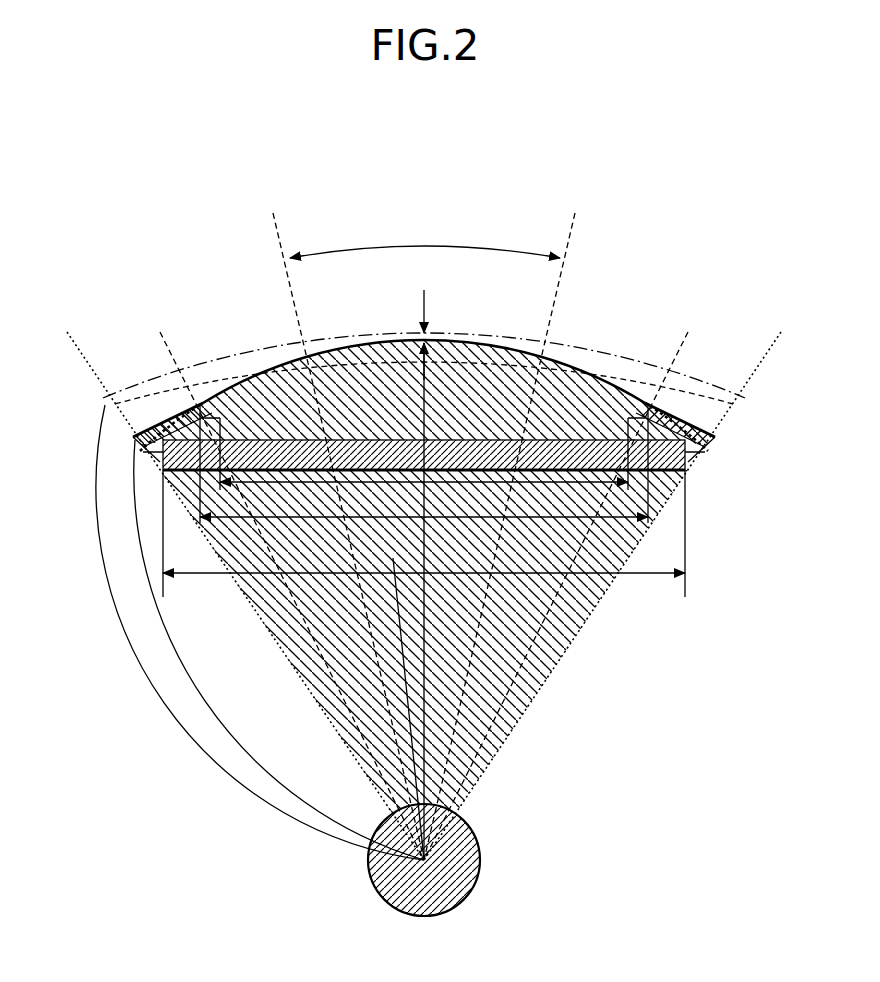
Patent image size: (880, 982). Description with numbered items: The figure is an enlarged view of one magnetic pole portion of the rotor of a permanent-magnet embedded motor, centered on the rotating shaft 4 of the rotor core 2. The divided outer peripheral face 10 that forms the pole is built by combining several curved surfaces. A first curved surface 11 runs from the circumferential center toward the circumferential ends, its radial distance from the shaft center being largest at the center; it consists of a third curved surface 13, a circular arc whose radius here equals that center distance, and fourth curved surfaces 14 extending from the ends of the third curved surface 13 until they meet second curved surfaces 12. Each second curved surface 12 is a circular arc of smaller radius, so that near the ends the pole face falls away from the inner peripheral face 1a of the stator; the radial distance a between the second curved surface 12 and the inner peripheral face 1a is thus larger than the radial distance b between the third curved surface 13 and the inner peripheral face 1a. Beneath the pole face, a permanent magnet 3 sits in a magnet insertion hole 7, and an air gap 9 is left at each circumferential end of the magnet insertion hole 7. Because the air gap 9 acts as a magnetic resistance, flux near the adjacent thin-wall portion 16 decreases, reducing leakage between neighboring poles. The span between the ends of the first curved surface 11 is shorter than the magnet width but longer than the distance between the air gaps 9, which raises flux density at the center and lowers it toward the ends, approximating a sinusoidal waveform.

The inner peripheral face 1a is at (620, 352).
The rotor core 2 is at (588, 408).
The permanent magnet 3 is at (688, 490).
The rotating shaft 4 is at (470, 862).
The magnet insertion hole 7 is at (568, 478).
The air gap 9 is at (140, 455).
The divided outer peripheral face 10 is at (380, 332).
The first curved surface 11 is at (188, 168).
The second curved surface 12 is at (174, 345).
The third curved surface 13 is at (282, 223).
The fourth curved surface 14 is at (174, 345).
The thin-wall portion 16 is at (422, 583).
The radial distance a is at (733, 428).
The radial distance b is at (432, 333).